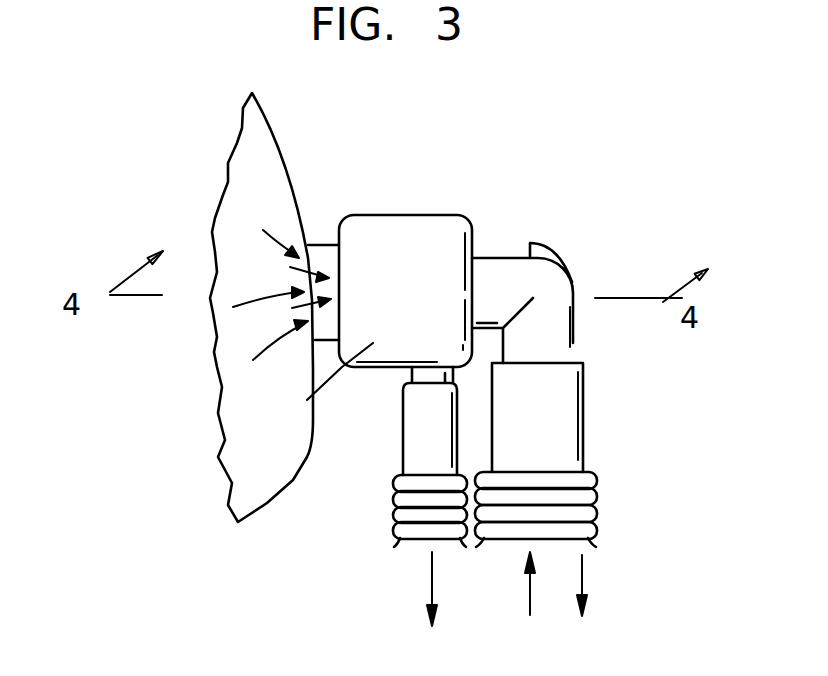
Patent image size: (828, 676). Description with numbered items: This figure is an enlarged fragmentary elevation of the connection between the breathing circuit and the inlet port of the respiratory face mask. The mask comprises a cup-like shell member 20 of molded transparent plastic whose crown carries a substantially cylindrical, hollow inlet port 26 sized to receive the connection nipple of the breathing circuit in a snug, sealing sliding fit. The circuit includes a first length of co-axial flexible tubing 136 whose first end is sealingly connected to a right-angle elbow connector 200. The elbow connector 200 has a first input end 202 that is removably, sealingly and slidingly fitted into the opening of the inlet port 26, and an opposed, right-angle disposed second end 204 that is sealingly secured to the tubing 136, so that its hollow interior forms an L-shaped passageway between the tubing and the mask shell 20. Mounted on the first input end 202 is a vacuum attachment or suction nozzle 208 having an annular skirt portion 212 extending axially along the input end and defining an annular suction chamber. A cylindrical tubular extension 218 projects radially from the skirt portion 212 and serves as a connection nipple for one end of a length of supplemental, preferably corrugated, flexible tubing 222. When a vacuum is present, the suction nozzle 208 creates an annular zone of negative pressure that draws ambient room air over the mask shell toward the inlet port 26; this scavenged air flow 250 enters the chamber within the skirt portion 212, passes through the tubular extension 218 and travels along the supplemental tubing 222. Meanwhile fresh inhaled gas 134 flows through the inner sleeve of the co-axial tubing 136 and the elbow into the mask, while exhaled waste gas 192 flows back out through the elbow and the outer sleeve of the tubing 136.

The shell member 20 is at (268, 142).
The inlet port 26 is at (322, 245).
The elbow connector 200 is at (598, 225).
The first input end 202 is at (490, 258).
The second end 204 is at (575, 345).
The suction nozzle 208 is at (413, 211).
The skirt portion 212 is at (307, 400).
The tubular extension 218 is at (410, 378).
The supplemental flexible tubing 222 is at (405, 500).
The scavenged ambient air flow 250 is at (253, 307).
The fresh gas flow 134 is at (530, 587).
The flexible tubing 136 is at (602, 497).
The exhaled waste gas flow 192 is at (582, 578).